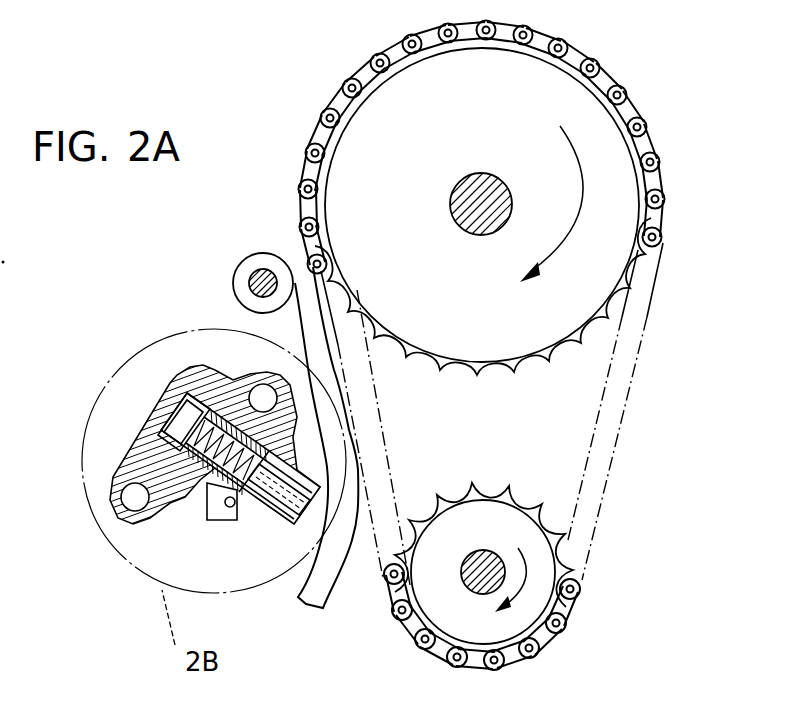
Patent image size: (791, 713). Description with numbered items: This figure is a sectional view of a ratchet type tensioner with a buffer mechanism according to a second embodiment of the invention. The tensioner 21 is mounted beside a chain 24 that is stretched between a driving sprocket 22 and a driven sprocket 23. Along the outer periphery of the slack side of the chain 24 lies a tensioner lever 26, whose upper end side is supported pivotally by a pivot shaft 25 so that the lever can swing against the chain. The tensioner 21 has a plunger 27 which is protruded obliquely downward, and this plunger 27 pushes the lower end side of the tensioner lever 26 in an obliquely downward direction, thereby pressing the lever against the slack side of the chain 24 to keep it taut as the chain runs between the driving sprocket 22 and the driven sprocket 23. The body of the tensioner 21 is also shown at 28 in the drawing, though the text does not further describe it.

The tensioner 21 is at (191, 443).
The driving sprocket 22 is at (500, 632).
The driven sprocket 23 is at (607, 155).
The chain 24 is at (650, 118).
The pivot shaft 25 is at (252, 281).
The tensioner lever 26 is at (333, 580).
The plunger 27 is at (259, 518).
The tensioner body 28 is at (193, 383).